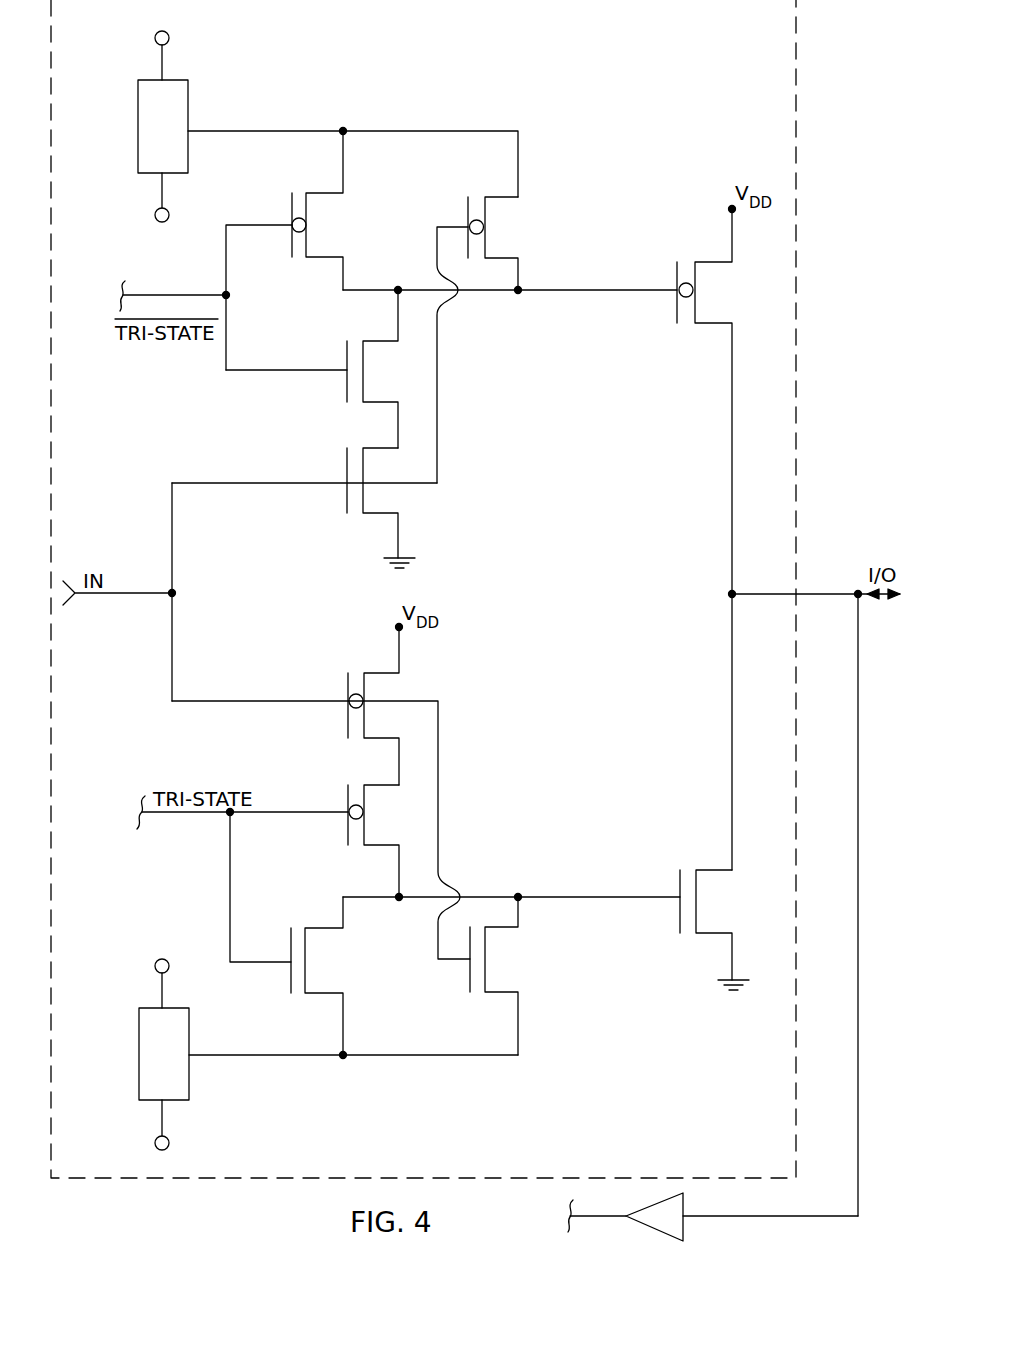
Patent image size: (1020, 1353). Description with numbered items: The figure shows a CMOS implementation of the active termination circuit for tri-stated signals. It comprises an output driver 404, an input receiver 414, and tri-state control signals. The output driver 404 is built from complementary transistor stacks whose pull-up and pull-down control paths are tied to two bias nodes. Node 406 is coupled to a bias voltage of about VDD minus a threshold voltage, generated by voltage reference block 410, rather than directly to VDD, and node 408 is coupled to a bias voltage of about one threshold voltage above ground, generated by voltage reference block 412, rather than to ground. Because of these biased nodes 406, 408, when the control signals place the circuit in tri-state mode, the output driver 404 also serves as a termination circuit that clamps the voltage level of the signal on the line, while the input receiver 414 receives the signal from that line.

The output driver 404 is at (796, 121).
The node 406 is at (422, 131).
The node 408 is at (400, 1055).
The voltage reference block 410 is at (175, 125).
The voltage reference block 412 is at (184, 1064).
The input receiver 414 is at (673, 1226).